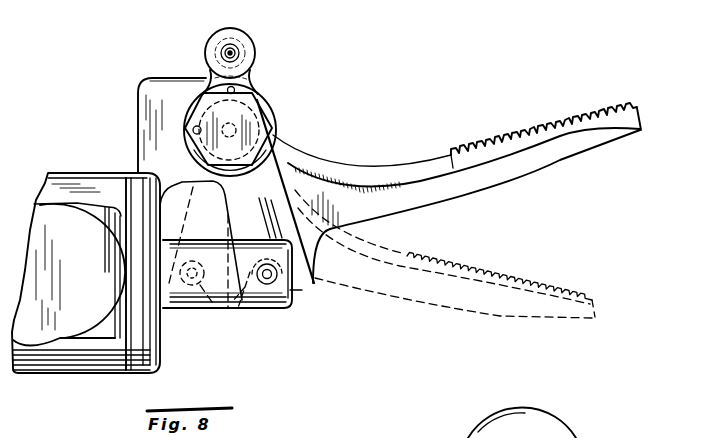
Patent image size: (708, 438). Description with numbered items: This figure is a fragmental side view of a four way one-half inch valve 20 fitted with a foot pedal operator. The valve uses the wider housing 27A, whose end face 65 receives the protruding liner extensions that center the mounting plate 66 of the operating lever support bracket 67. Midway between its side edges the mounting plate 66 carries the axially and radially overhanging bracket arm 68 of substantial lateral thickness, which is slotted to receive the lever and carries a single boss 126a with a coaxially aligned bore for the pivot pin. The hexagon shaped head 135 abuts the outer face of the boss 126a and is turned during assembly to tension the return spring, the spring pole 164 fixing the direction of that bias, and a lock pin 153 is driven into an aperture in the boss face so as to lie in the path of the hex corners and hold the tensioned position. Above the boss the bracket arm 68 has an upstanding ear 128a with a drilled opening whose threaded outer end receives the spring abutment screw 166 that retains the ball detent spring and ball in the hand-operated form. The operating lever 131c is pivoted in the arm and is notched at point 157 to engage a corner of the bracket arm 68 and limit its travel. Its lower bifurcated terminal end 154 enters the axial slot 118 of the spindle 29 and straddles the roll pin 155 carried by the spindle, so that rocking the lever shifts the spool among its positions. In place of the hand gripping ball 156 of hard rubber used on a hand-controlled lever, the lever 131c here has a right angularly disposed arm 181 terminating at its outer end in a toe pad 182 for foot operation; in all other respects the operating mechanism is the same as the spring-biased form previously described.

The valve 20 is at (70, 377).
The housing 27A is at (78, 172).
The end face 65 is at (136, 350).
The mounting plate 66 is at (138, 371).
The operating lever support bracket 67 is at (140, 120).
The bracket arm 68 is at (176, 70).
The upstanding ear 128a is at (246, 43).
The spring abutment screw 166 is at (240, 53).
The lock pin 153 is at (235, 88).
The boss 126a is at (253, 102).
The hexagon shaped head 135 is at (262, 117).
The spring pole 164 is at (199, 128).
The arm 181 is at (398, 160).
The toe pad 182 is at (577, 110).
The operating lever 131c is at (274, 208).
The notch 157 is at (198, 247).
The roll pin 155 is at (263, 262).
The bifurcated terminal end 154 is at (309, 283).
The spindle 29 is at (176, 310).
The axial slot 118 is at (238, 308).
The hand gripping ball 156 is at (583, 437).